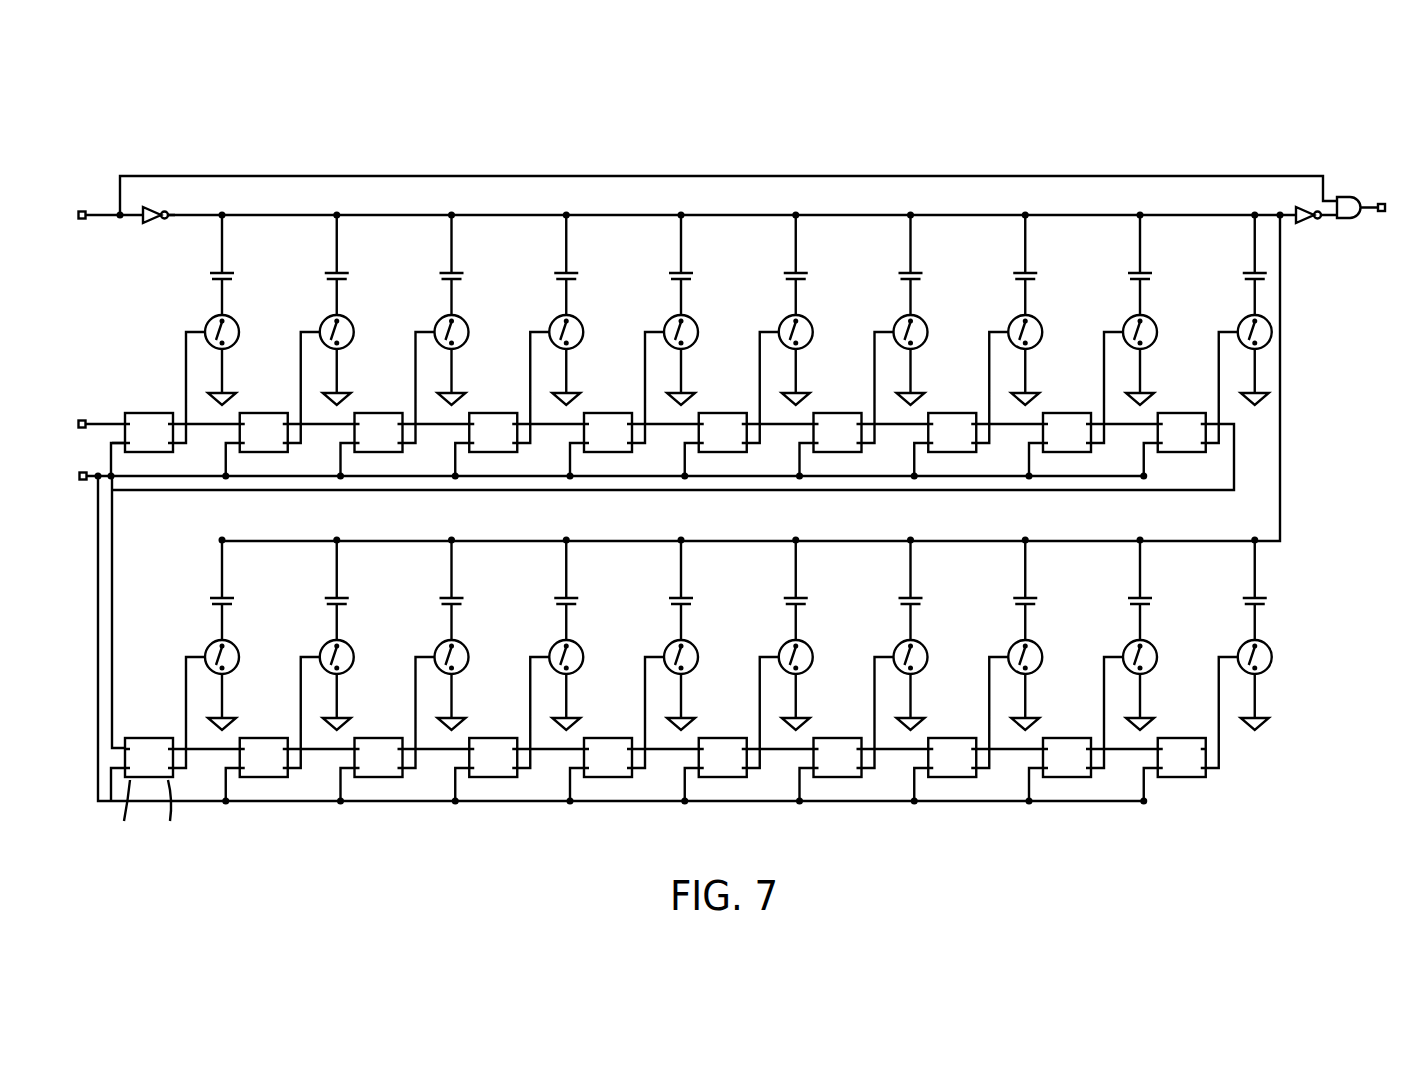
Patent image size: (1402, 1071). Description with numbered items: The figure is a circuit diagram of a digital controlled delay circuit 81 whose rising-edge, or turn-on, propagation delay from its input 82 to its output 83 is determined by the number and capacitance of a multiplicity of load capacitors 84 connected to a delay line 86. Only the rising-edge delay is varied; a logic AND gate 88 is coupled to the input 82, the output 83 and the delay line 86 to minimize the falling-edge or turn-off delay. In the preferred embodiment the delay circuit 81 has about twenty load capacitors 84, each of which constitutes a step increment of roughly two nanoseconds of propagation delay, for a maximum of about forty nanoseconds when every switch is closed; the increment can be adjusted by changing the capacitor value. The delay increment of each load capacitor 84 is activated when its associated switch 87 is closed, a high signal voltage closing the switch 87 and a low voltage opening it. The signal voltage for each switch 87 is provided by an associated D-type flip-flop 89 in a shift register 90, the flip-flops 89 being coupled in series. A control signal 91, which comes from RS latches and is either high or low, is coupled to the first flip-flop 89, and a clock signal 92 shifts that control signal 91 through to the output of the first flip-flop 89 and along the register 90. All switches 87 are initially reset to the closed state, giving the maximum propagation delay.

The digital controlled delay circuit 81 is at (162, 158).
The input 82 is at (81, 224).
The output 83 is at (1378, 213).
The load capacitor 84 is at (726, 426).
The delay line 86 is at (257, 215).
The switch 87 is at (736, 541).
The logic AND gate 88 is at (1344, 196).
The D-type flip-flop 89 is at (668, 615).
The shift register 90 is at (100, 440).
The control signal 91 is at (80, 419).
The clock signal 92 is at (83, 483).